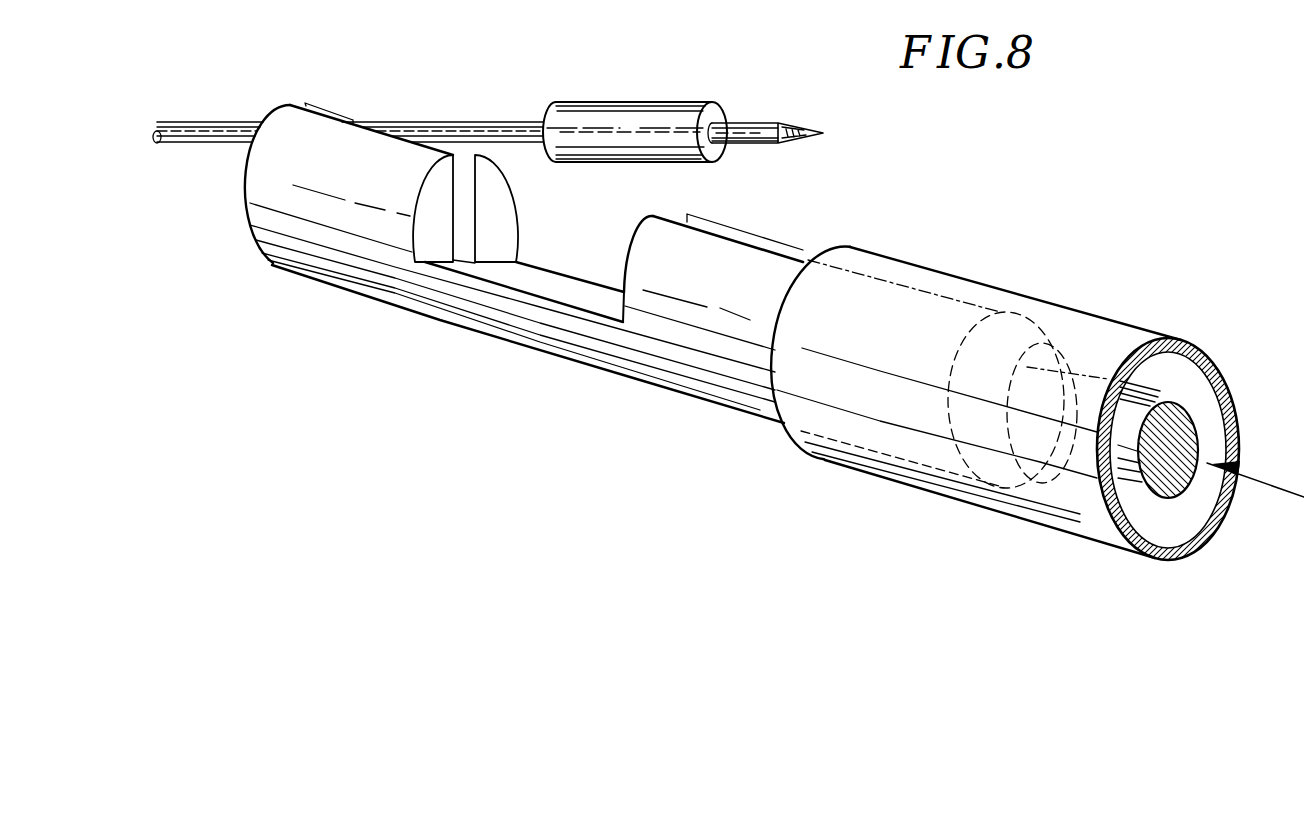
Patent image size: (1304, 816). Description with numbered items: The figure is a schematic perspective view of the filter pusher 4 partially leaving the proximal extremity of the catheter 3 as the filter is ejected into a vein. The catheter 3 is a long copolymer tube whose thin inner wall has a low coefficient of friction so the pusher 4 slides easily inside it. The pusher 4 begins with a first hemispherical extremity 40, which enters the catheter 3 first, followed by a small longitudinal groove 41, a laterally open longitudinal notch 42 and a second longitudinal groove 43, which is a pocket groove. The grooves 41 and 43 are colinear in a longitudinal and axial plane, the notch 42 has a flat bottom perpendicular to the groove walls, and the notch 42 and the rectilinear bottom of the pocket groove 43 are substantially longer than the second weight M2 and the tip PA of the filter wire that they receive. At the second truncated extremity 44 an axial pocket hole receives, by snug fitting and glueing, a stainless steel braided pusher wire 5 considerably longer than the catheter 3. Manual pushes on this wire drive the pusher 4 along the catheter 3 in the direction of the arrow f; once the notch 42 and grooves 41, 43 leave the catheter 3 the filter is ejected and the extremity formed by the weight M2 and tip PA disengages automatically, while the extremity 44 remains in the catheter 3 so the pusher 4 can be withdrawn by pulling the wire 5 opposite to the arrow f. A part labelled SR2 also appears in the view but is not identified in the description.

The catheter 3 is at (831, 463).
The filter pusher 4 is at (530, 338).
The stainless steel braided wire 5 is at (1163, 399).
The first hemispherical extremity 40 is at (246, 205).
The small longitudinal groove 41 is at (467, 200).
The laterally open longitudinal notch 42 is at (592, 263).
The second longitudinal groove 43 is at (742, 212).
The second truncated extremity 44 is at (1066, 306).
The second slide rod SR2 is at (202, 131).
The second weight M2 is at (626, 104).
The tip PA is at (771, 121).
The arrow f is at (1273, 481).